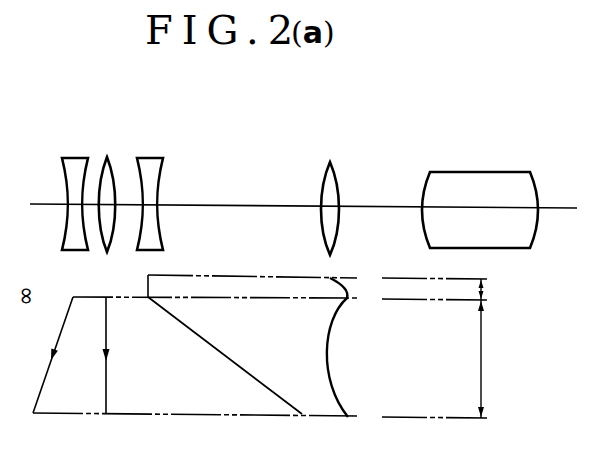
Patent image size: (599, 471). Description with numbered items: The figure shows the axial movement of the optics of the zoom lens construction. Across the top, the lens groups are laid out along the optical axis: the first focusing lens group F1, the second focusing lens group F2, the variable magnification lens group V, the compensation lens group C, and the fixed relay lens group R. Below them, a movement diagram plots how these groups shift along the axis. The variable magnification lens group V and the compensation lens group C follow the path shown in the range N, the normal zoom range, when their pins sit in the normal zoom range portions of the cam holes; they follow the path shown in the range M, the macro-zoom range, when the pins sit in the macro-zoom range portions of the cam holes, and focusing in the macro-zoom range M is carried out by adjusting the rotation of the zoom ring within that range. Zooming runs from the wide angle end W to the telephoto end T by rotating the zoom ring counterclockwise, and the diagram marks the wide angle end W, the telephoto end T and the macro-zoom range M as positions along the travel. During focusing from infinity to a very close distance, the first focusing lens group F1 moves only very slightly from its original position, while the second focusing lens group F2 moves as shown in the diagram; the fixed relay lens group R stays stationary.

The first focusing lens group F1 is at (75, 158).
The second focusing lens group F2 is at (106, 157).
The variable magnification lens group V is at (150, 158).
The compensation lens group C is at (329, 162).
The fixed relay lens group R is at (470, 172).
The macro-zoom range M is at (326, 284).
The wide angle end W is at (280, 302).
The telephoto end T is at (260, 415).
The normal zoom range N is at (258, 364).